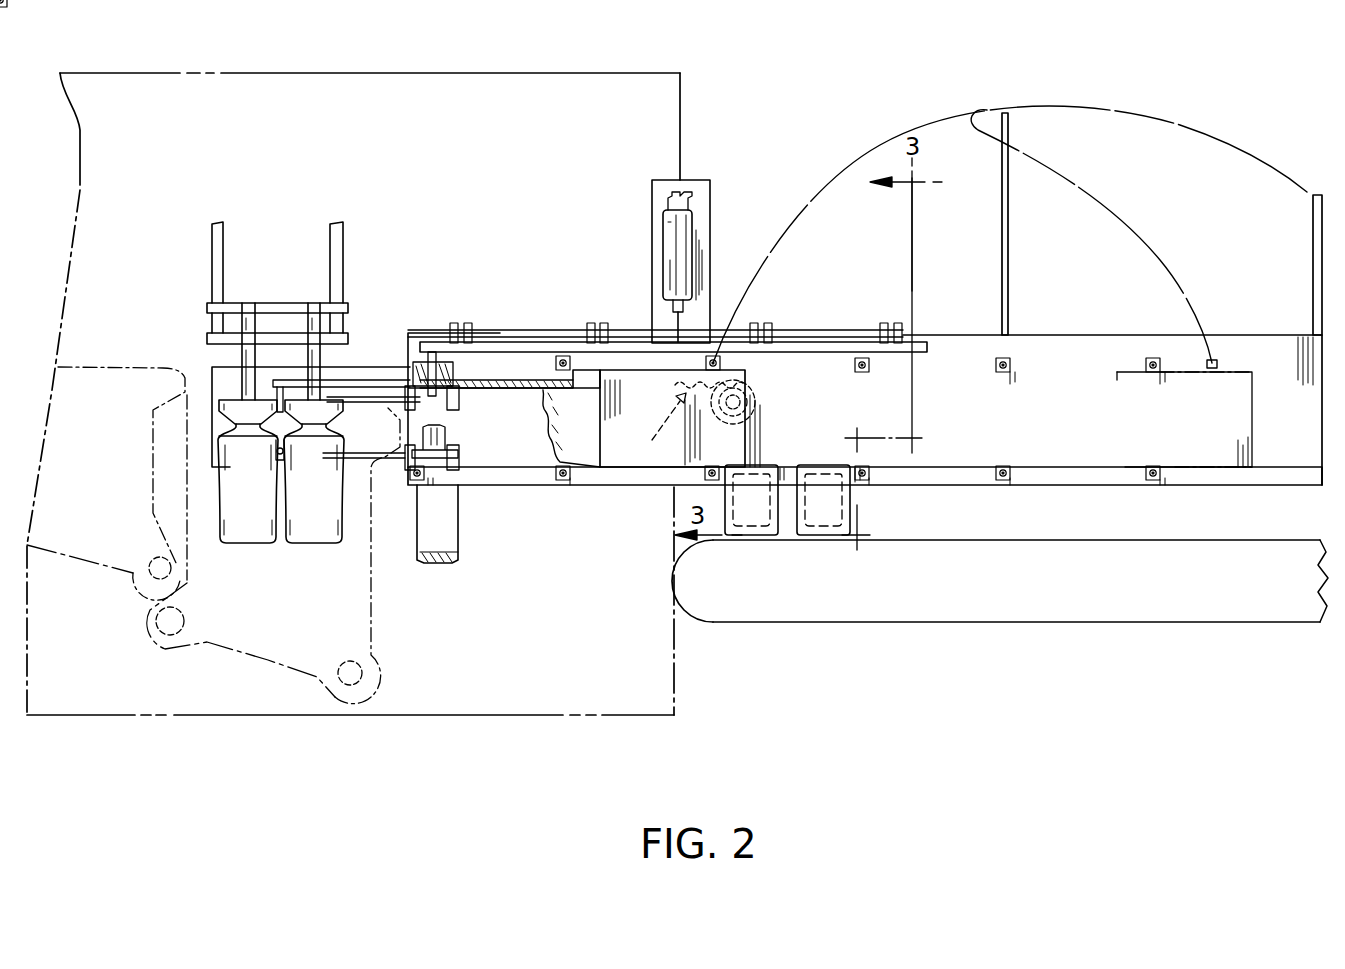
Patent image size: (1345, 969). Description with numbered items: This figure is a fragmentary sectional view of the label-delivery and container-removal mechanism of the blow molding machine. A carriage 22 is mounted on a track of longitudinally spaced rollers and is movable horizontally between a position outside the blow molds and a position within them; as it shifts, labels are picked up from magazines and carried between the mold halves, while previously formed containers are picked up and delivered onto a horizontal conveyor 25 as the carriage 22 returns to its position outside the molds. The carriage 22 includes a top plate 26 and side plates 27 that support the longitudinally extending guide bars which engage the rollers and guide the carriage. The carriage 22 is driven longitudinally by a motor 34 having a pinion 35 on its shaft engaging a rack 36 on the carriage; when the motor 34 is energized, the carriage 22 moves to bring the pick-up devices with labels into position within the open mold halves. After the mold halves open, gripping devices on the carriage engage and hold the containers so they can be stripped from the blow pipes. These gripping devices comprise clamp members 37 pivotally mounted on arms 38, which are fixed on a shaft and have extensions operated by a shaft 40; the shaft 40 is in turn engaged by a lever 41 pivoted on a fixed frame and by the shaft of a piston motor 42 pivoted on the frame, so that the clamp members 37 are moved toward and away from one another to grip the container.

The carriage 22 is at (521, 376).
The horizontal conveyor 25 is at (1086, 540).
The top plate 26 is at (498, 377).
The side plates 27 is at (528, 453).
The motor 34 is at (783, 392).
The pinion 35 is at (743, 415).
The rack 36 is at (655, 426).
The clamp members 37 is at (222, 437).
The arms 38 is at (221, 413).
The shaft 40 is at (412, 372).
The lever 41 is at (757, 325).
The piston motor 42 is at (670, 263).